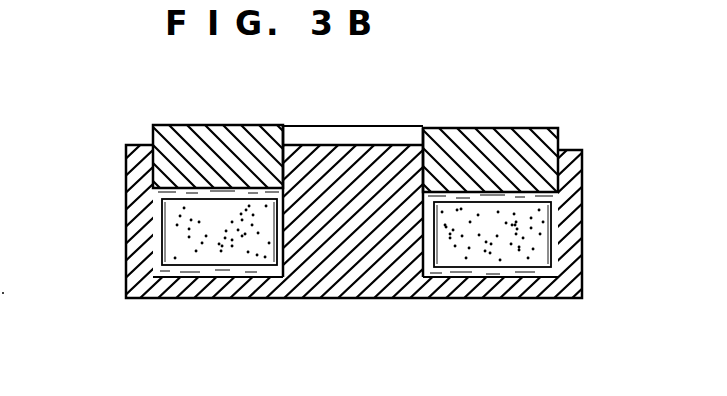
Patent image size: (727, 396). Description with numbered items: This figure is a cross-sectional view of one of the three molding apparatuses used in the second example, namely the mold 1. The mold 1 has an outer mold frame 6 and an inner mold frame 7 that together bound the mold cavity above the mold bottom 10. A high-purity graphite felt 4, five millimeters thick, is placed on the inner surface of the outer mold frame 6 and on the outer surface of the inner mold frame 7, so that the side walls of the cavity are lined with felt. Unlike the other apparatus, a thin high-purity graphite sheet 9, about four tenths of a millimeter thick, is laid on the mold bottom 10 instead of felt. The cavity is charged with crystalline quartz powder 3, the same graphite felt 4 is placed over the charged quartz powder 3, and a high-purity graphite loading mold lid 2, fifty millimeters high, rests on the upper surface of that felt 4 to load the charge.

The mold 1 is at (363, 199).
The high-purity graphite loading mold lid 2 is at (520, 128).
The crystalline quartz powder 3 is at (492, 250).
The high-purity graphite felt 4 is at (272, 228).
The outer mold frame 6 is at (556, 201).
The inner mold frame 7 is at (360, 253).
The high-purity graphite sheet 9 is at (500, 275).
The mold bottom 10 is at (230, 293).